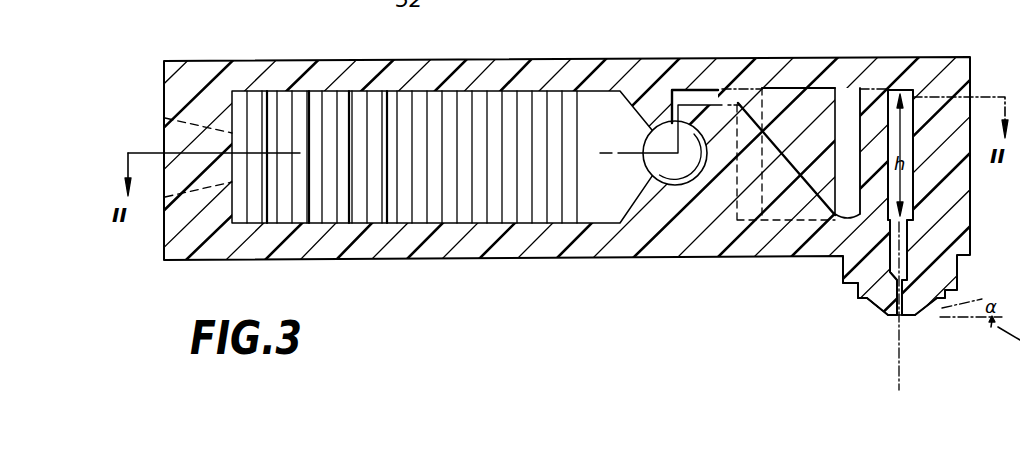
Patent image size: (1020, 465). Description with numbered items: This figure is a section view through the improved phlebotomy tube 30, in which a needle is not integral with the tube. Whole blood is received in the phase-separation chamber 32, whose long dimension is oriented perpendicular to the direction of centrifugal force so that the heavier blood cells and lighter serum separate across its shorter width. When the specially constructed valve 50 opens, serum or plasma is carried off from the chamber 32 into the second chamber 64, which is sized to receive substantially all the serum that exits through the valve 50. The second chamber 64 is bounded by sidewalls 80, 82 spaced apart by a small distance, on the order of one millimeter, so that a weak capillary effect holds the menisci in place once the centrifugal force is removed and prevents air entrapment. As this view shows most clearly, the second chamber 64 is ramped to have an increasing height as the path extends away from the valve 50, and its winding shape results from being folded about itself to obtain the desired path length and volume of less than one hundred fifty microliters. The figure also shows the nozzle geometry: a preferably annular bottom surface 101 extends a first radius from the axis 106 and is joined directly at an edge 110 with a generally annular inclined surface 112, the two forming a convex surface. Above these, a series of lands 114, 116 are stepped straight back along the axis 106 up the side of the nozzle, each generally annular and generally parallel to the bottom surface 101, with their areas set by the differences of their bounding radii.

The phlebotomy tube 30 is at (478, 262).
The chamber 32 is at (612, 189).
The valve 50 is at (666, 195).
The second chamber 64 is at (808, 126).
The sidewall 80 is at (842, 115).
The sidewall 82 is at (856, 115).
The bottom surface 101 is at (887, 347).
The axis 106 is at (900, 347).
The edge 110 is at (893, 317).
The inclined surface 112 is at (883, 313).
The land 114 is at (862, 302).
The land 116 is at (958, 289).